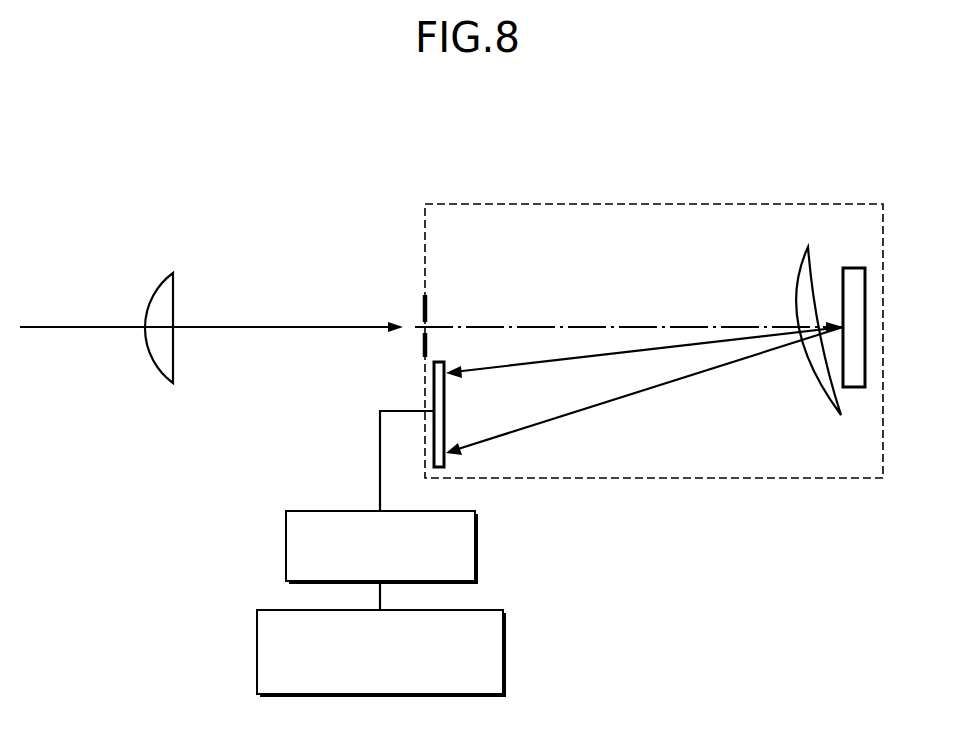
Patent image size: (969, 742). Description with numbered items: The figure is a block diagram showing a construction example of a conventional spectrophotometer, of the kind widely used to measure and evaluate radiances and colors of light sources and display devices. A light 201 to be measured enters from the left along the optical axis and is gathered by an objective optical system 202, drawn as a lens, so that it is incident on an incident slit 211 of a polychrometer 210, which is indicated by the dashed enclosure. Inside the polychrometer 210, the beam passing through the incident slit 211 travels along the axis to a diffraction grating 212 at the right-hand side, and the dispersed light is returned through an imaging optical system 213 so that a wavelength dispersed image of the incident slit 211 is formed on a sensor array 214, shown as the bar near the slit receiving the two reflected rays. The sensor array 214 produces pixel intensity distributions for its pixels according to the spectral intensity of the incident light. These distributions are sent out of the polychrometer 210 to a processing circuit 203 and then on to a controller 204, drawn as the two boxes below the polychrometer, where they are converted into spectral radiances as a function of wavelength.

The light to be measured 201 is at (68, 330).
The objective optical system 202 is at (171, 309).
The processing circuit 203 is at (478, 545).
The controller 204 is at (506, 648).
The polychrometer 210 is at (683, 181).
The incident slit 211 is at (417, 325).
The diffraction grating 212 is at (853, 389).
The imaging optical system 213 is at (808, 302).
The sensor array 214 is at (446, 405).